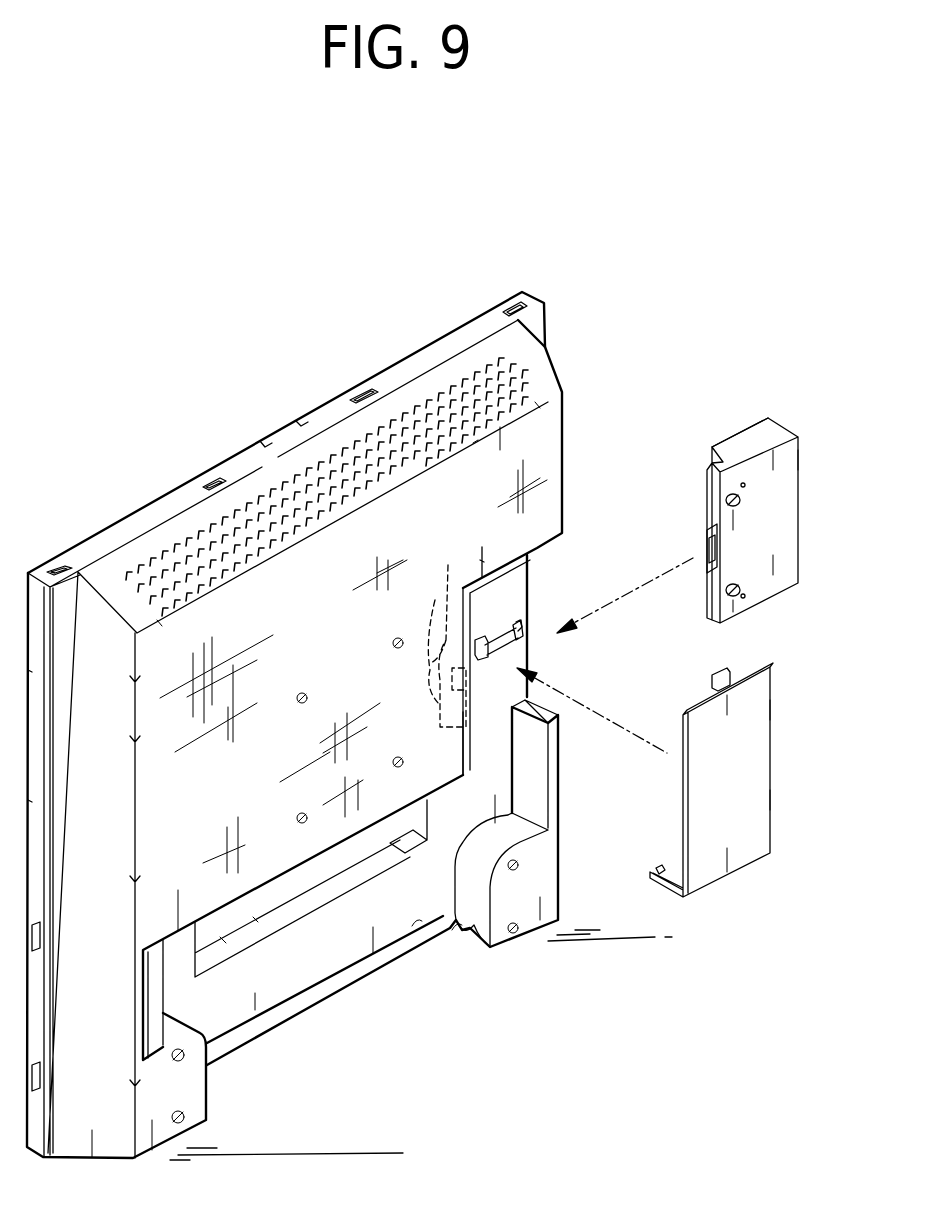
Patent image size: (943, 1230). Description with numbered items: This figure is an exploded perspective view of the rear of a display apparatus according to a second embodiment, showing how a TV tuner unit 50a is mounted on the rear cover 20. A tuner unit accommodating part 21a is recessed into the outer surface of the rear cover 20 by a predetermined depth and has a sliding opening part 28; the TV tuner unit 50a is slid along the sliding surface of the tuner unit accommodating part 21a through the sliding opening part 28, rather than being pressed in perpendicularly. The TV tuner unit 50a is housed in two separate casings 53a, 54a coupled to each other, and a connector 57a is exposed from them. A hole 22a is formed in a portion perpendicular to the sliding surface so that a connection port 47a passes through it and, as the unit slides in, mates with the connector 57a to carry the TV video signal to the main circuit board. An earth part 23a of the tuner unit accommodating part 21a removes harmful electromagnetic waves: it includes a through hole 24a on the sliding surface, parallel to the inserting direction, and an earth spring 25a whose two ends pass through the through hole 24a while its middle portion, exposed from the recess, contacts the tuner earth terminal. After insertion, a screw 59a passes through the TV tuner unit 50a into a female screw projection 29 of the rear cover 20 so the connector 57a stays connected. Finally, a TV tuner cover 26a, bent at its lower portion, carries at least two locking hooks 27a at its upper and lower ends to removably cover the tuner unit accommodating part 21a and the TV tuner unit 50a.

The rear cover 20 is at (360, 726).
The tuner unit accommodating part 21a is at (510, 712).
The hole 22a is at (440, 708).
The earth part 23a is at (610, 513).
The through hole 24a is at (525, 630).
The earth spring 25a is at (503, 637).
The TV tuner cover 26a is at (731, 814).
The locking hooks 27a is at (725, 673).
The sliding opening part 28 is at (528, 653).
The female screw projection 29 is at (502, 693).
The connection port 47a is at (450, 590).
The TV tuner unit 50a is at (749, 476).
The casing 53a is at (742, 443).
The casing 54a is at (782, 520).
The connector 57a is at (702, 557).
The screw 59a is at (727, 500).